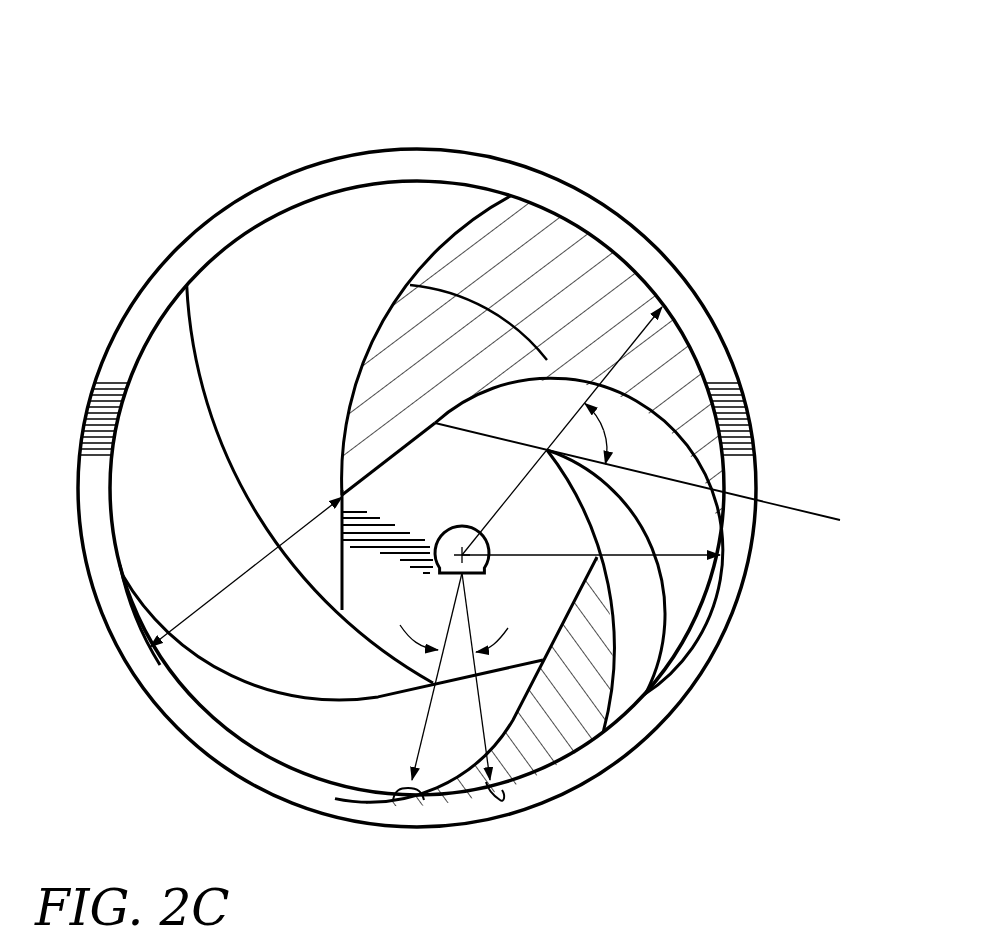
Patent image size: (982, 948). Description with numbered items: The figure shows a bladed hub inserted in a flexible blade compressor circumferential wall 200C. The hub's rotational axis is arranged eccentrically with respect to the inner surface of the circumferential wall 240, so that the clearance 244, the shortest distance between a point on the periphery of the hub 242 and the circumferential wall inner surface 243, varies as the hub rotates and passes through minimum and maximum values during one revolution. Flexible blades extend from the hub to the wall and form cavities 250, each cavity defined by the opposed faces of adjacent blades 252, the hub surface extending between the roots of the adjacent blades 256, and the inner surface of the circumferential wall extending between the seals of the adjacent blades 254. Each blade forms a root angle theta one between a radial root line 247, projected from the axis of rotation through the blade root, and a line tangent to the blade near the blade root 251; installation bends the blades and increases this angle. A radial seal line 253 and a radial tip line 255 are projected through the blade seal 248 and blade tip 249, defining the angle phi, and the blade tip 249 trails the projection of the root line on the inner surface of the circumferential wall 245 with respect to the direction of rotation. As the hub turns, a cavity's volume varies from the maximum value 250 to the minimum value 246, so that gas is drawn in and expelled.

The bladed hub inserted in flexible blade compressor circumferential wall 200C is at (122, 236).
The circumferential wall 240 is at (383, 178).
The point on the periphery of the hub 242 is at (338, 492).
The circumferential wall inner surface 243 is at (152, 650).
The clearance 244 is at (213, 600).
The projection of the root line on the inner surface of the circumferential wall 245 is at (722, 558).
The minimum cavity volume 246 is at (600, 738).
The radial root line 247 is at (645, 376).
The blade seal 248 is at (492, 790).
The blade tip 249 is at (398, 800).
The cavity 250 is at (502, 250).
The line tangent to the blade near the blade root 251 is at (838, 519).
The opposed faces of adjacent blades 252 is at (388, 330).
The radial seal line 253 is at (474, 607).
The inner surface of the circumferential wall extending between seals 254 is at (565, 248).
The radial tip line 255 is at (420, 722).
The hub surface extending between the roots of adjacent blades 256 is at (388, 452).